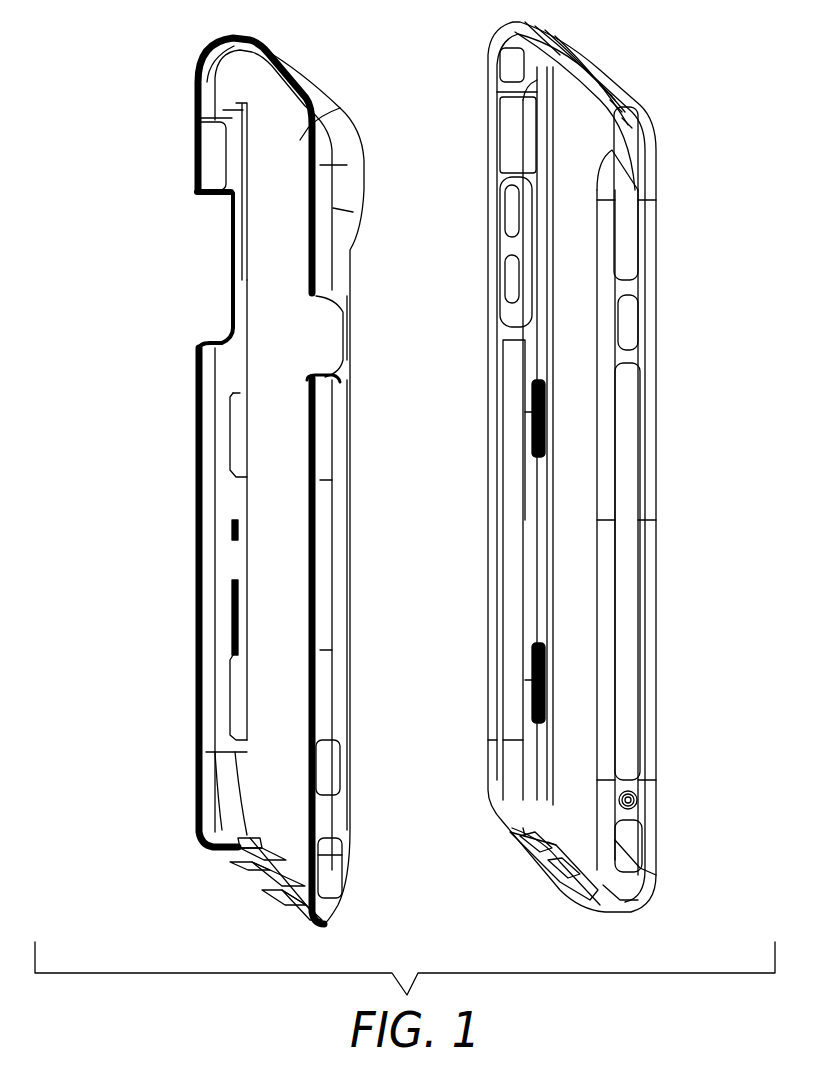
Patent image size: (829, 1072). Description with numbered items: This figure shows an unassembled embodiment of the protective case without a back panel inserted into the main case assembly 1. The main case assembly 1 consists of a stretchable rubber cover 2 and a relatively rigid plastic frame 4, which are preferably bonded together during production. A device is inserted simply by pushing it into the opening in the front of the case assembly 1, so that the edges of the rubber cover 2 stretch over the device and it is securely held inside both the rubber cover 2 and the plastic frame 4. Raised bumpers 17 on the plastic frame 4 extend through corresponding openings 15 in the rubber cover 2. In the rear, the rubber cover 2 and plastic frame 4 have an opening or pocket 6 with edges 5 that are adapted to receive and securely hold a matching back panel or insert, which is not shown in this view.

The main case assembly 1 is at (127, 540).
The stretchable rubber cover 2 is at (647, 783).
The plastic frame 4 is at (202, 805).
The edges 5 is at (567, 810).
The opening or pocket 6 is at (573, 573).
The openings 15 is at (627, 242).
The raised bumpers 17 is at (320, 157).